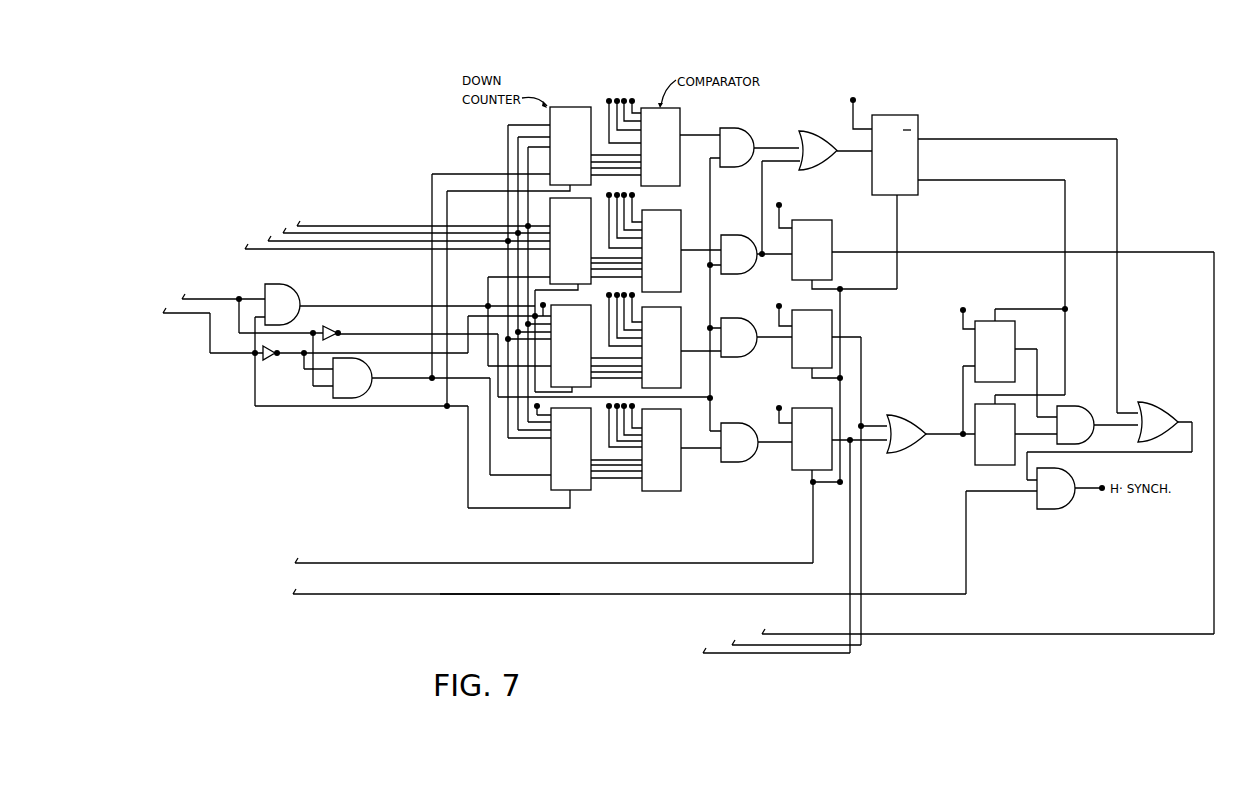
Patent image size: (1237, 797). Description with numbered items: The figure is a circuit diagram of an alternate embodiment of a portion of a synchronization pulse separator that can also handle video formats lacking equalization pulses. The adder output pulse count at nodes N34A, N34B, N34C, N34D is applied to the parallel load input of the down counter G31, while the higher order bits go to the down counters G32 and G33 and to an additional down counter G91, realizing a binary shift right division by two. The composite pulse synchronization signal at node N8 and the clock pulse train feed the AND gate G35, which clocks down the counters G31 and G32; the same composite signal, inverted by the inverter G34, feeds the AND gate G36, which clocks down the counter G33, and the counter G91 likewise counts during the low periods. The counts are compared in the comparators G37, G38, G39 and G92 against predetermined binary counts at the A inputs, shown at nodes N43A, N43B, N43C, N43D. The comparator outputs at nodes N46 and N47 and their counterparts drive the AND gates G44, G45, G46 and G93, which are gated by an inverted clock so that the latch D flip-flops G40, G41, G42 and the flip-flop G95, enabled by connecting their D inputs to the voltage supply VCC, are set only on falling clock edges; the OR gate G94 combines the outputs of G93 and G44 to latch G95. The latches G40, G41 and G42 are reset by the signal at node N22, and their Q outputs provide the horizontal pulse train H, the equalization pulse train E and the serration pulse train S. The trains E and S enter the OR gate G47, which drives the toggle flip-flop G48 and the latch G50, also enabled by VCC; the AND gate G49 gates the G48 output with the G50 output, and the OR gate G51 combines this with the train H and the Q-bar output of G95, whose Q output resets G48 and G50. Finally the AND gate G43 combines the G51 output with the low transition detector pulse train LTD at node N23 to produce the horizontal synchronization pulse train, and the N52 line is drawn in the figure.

The down counter G91 is at (536, 149).
The comparator G92 is at (680, 147).
The down counter G31 is at (565, 244).
The down counter G32 is at (555, 347).
The down counter G33 is at (555, 455).
The comparator G37 is at (643, 242).
The comparator G38 is at (643, 340).
The comparator G39 is at (643, 447).
The AND gate G93 is at (754, 147).
The OR gate G94 is at (817, 150).
The D flip-flop G95 is at (994, 155).
The latch D flip-flop G40 is at (844, 256).
The latch D flip-flop G41 is at (817, 345).
The latch D flip-flop G42 is at (817, 446).
The AND gate G44 is at (749, 254).
The AND gate G45 is at (749, 337).
The AND gate G46 is at (749, 428).
The OR gate G47 is at (931, 434).
The toggle flip-flop G48 is at (1020, 430).
The AND gate G49 is at (1087, 425).
The latch G50 is at (1015, 344).
The OR gate G51 is at (1109, 441).
The AND gate G43 is at (672, 409).
The inverter G34 is at (315, 341).
The AND gate G35 is at (395, 304).
The AND gate G36 is at (397, 378).
The node N8 is at (223, 291).
The node N22 is at (554, 553).
The node N23 is at (500, 584).
The node N34A is at (300, 226).
The node N34B is at (303, 233).
The node N34C is at (306, 241).
The node N34D is at (309, 249).
The input node N43A is at (632, 99).
The input node N43B is at (624, 99).
The input node N43C is at (617, 99).
The input node N43D is at (609, 99).
The node N46 is at (701, 341).
The node N47 is at (701, 360).
The signal line N52 is at (524, 357).
The low transition detector pulse train LTD is at (629, 585).
The positive voltage supply VCC is at (872, 254).
The horizontal pulse train H is at (988, 435).
The equalization pulse train E is at (809, 482).
The serration pulse train S is at (795, 537).